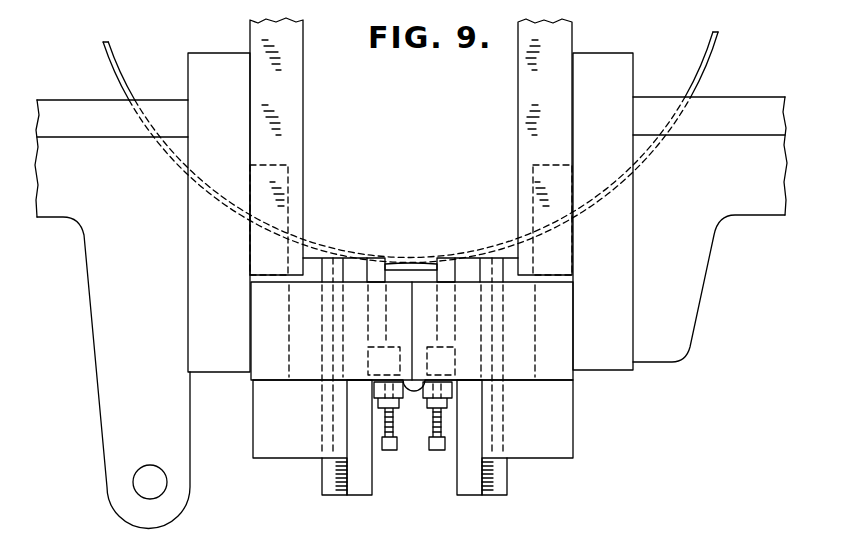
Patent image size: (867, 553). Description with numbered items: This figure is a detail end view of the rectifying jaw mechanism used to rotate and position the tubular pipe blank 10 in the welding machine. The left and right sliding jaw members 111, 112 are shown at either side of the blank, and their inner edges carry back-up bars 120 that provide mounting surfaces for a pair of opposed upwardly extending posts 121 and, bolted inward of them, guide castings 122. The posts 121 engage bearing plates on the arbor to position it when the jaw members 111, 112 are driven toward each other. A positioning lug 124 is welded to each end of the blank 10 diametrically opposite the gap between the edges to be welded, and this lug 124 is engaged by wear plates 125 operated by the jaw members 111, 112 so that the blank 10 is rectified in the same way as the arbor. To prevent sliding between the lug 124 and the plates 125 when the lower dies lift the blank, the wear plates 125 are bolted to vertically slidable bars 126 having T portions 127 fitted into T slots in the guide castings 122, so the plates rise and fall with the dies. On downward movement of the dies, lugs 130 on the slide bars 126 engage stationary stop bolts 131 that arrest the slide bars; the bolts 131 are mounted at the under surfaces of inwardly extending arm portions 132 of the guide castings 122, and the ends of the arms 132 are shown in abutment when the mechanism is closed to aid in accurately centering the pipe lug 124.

The tubular pipe blank 10 is at (697, 62).
The left sliding jaw member 111 is at (90, 215).
The right sliding jaw member 112 is at (708, 238).
The back-up bar 120 is at (205, 302).
The post 121 is at (298, 120).
The guide casting 122 is at (285, 452).
The positioning lug 124 is at (411, 262).
The wear plate 125 is at (378, 258).
The vertically slidable bar 126 is at (456, 480).
The T portion 127 is at (339, 487).
The lug 130 is at (432, 345).
The stop bolt 131 is at (434, 430).
The arm portion 132 is at (352, 362).